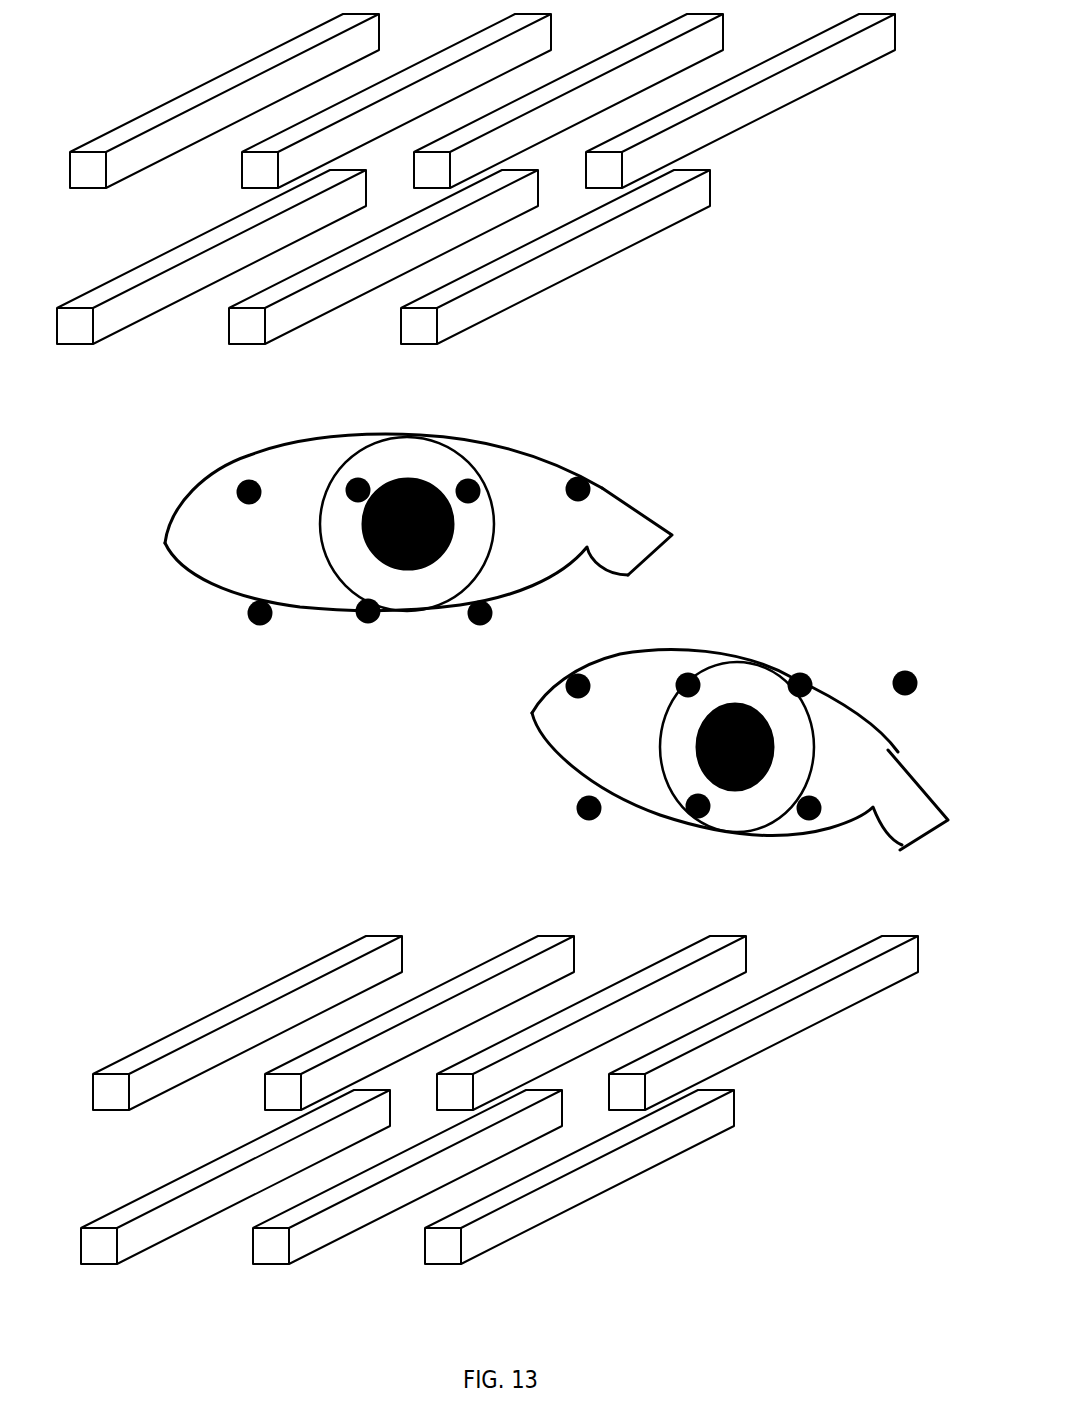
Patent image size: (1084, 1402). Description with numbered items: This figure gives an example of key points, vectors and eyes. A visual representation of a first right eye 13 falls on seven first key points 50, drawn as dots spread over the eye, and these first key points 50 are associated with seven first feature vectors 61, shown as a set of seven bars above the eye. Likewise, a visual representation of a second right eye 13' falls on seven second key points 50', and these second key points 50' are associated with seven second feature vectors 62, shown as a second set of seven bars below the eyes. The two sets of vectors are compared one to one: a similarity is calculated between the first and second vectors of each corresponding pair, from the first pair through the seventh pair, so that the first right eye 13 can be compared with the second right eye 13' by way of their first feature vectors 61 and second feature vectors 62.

The first feature vectors 61 is at (725, 245).
The second feature vectors 62 is at (697, 1220).
The first right eye 13 is at (444, 522).
The second right eye 13' is at (740, 783).
The first key points 50 is at (371, 534).
The second key points 50' is at (740, 737).